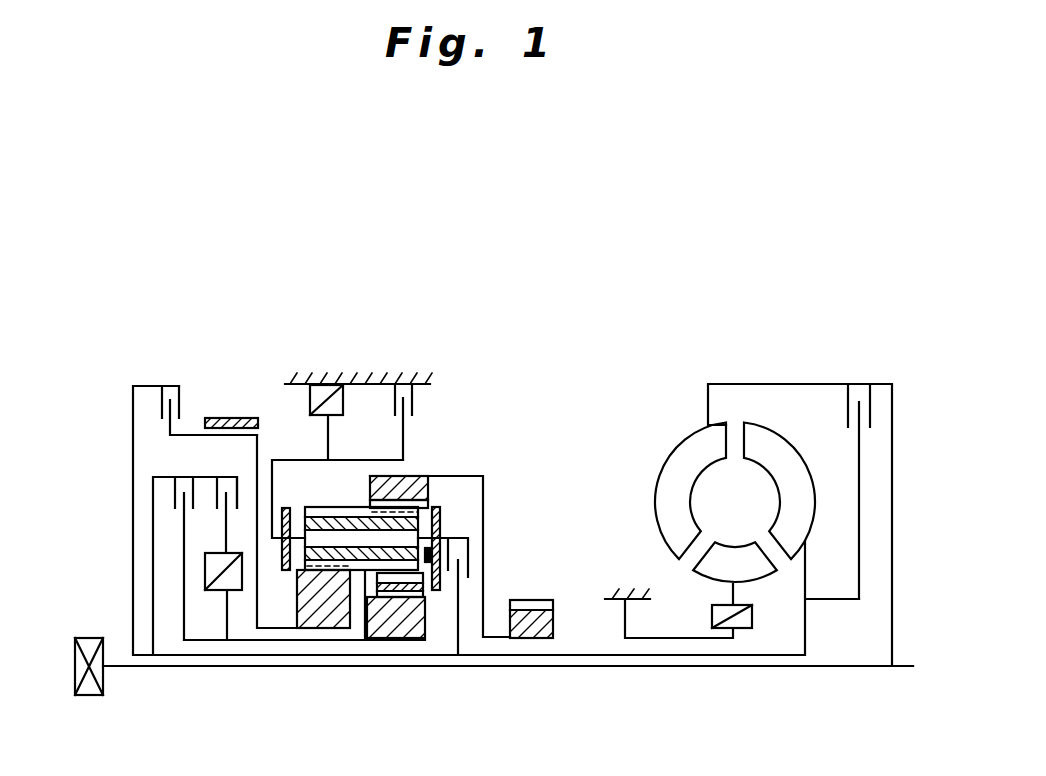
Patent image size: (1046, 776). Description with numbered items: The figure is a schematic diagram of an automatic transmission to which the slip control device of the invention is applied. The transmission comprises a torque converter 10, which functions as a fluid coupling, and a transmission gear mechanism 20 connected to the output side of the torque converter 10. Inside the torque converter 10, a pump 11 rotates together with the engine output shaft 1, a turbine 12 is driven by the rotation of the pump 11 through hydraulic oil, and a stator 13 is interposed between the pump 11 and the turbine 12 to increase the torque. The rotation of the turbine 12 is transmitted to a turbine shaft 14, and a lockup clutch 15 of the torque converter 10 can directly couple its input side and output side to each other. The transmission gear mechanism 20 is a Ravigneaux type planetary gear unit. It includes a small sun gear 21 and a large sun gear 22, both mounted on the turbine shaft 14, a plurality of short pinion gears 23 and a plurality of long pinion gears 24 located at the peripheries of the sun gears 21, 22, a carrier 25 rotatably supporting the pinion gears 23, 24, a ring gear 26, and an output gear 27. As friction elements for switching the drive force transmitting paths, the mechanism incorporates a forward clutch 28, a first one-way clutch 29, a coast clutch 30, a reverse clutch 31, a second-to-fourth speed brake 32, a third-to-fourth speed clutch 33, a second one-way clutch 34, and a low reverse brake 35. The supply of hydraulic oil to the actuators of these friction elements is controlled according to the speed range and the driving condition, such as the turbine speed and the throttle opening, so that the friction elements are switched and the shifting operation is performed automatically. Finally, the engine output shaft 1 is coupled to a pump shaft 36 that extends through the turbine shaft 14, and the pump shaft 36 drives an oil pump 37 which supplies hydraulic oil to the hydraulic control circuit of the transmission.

The engine output shaft 1 is at (905, 665).
The torque converter 10 is at (832, 383).
The pump 11 is at (668, 477).
The turbine 12 is at (793, 472).
The stator 13 is at (742, 620).
The turbine shaft 14 is at (583, 654).
The lockup clutch 15 is at (870, 412).
The transmission gear mechanism 20 is at (493, 523).
The small sun gear 21 is at (387, 633).
The large sun gear 22 is at (322, 620).
The short pinion gears 23 is at (425, 633).
The long pinion gears 24 is at (342, 518).
The carrier 25 is at (442, 492).
The ring gear 26 is at (412, 477).
The output gear 27 is at (537, 600).
The forward clutch 28 is at (237, 493).
The first one-way clutch 29 is at (208, 576).
The coast clutch 30 is at (195, 487).
The reverse clutch 31 is at (182, 400).
The 2-4 brake 32 is at (232, 418).
The 3-4 clutch 33 is at (460, 538).
The second one-way clutch 34 is at (338, 412).
The low reverse brake 35 is at (412, 393).
The pump shaft 36 is at (185, 668).
The oil pump 37 is at (90, 695).